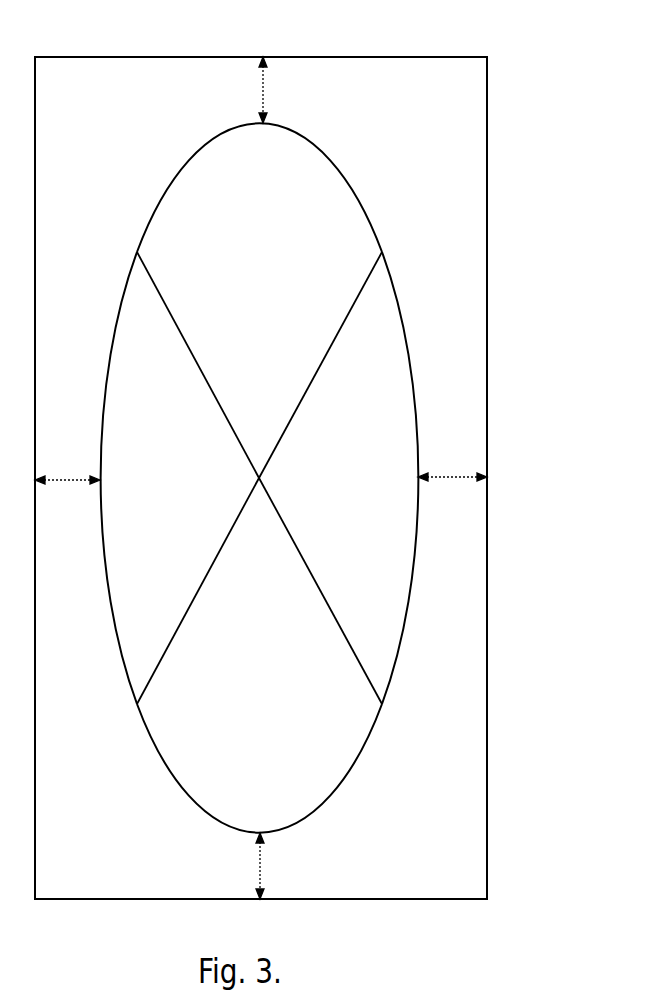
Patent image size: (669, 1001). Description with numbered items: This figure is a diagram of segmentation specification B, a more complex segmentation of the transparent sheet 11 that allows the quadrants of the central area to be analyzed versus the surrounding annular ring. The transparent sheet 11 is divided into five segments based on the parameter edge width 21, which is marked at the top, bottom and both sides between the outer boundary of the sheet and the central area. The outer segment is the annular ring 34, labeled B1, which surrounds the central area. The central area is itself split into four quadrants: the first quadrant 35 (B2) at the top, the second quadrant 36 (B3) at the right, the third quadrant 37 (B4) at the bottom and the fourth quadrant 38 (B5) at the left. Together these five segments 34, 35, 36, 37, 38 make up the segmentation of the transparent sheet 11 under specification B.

The transparent sheet 11 is at (499, 338).
The edge width 21 is at (261, 478).
The annular ring 34 is at (112, 127).
The first quadrant of central area 35 is at (259, 300).
The second quadrant of central area 36 is at (338, 478).
The third quadrant of central area 37 is at (259, 655).
The fourth quadrant of central area 38 is at (137, 478).